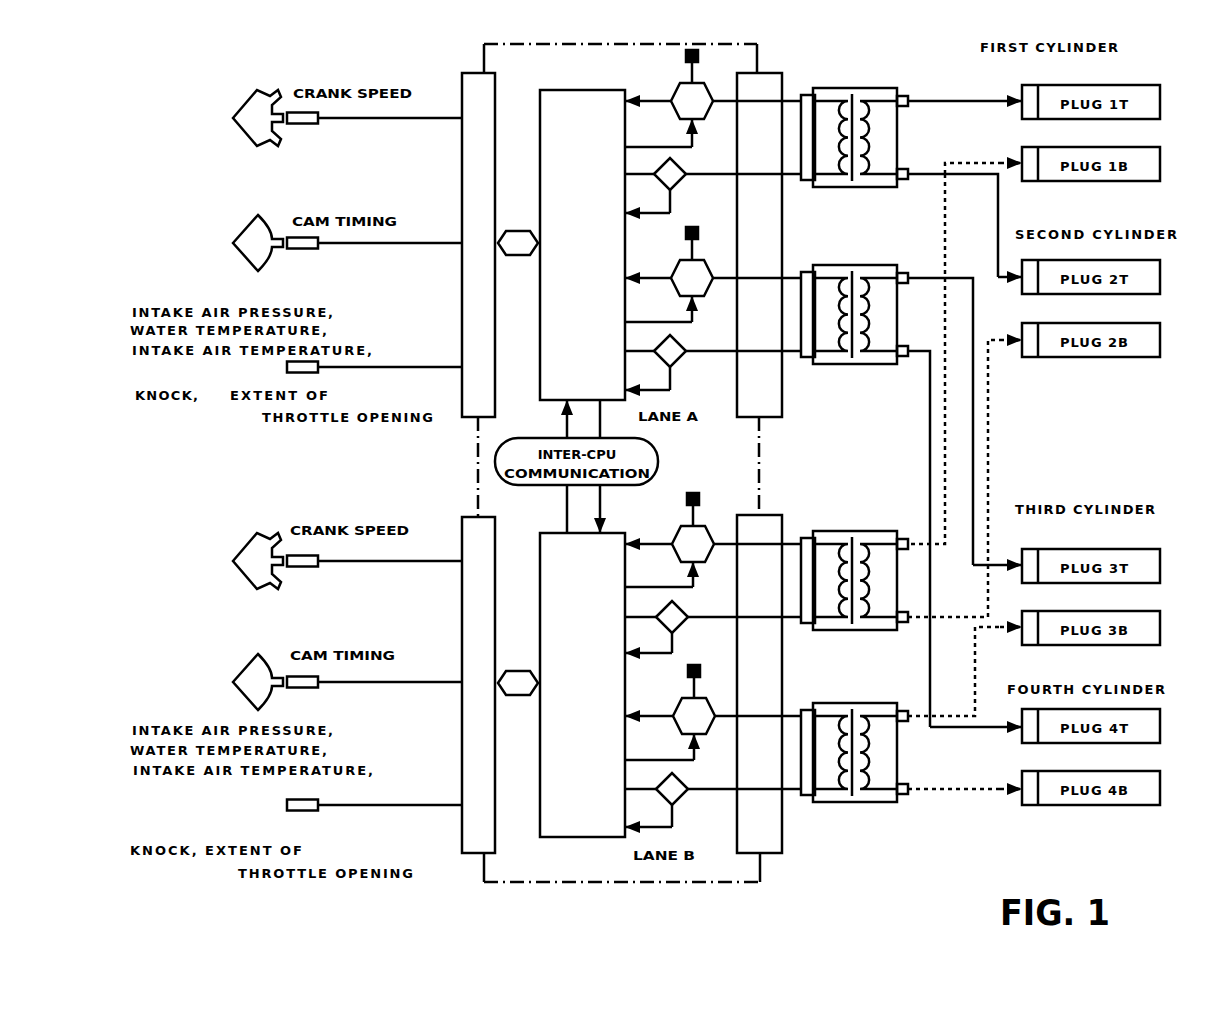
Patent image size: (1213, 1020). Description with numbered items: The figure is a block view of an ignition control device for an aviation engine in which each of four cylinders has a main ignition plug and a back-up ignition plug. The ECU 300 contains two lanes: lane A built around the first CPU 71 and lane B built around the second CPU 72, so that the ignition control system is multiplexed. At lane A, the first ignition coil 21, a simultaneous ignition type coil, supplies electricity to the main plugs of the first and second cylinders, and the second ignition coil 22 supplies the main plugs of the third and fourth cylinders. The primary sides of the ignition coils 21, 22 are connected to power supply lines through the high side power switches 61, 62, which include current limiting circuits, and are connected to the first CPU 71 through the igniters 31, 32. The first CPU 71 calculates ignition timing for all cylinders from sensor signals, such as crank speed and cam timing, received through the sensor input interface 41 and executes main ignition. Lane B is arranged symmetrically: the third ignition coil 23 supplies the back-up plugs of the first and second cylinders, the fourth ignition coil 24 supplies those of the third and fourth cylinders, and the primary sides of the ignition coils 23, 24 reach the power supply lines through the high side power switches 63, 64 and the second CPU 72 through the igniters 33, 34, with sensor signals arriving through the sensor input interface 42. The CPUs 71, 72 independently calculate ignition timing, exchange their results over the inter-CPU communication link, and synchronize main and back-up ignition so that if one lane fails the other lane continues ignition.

The first ignition coil 21 is at (868, 88).
The second ignition coil 22 is at (868, 265).
The third ignition coil 23 is at (865, 533).
The fourth ignition coil 24 is at (865, 703).
The igniter 31 is at (681, 185).
The igniter 32 is at (681, 362).
The igniter 33 is at (683, 628).
The igniter 34 is at (683, 798).
The sensor input interface 41 is at (478, 73).
The sensor input interface 42 is at (478, 518).
The high side power switch 61 is at (673, 86).
The high side power switch 62 is at (680, 262).
The high side power switch 63 is at (680, 530).
The high side power switch 64 is at (684, 703).
The first CPU 71 is at (540, 90).
The second CPU 72 is at (567, 838).
The ECU 300 is at (700, 884).